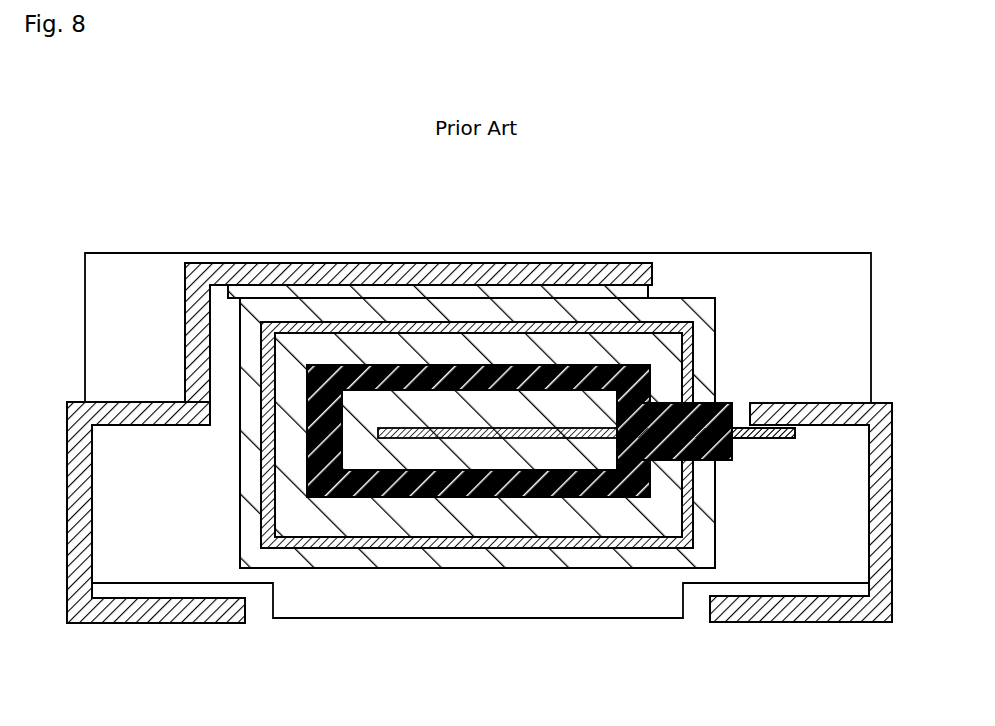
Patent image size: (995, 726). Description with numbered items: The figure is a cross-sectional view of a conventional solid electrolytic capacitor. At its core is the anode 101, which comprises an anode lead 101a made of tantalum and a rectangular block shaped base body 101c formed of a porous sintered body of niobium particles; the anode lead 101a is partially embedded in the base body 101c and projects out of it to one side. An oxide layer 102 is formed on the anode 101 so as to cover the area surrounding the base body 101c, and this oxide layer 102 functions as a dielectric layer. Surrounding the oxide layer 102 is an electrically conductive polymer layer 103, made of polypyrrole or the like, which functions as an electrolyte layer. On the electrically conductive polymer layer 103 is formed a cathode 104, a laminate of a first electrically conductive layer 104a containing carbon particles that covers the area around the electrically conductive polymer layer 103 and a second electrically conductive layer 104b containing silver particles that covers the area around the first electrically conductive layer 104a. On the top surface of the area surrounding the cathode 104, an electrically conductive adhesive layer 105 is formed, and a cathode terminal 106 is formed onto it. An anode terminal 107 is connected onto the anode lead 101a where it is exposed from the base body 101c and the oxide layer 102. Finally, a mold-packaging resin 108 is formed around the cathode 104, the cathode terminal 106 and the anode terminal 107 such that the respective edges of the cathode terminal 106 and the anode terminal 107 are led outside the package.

The anode 101 is at (568, 312).
The anode lead 101a is at (743, 426).
The base body 101c is at (538, 400).
The oxide layer 102 is at (400, 365).
The electrically conductive polymer layer 103 is at (432, 520).
The cathode 104 is at (471, 501).
The first electrically conductive layer 104a is at (668, 681).
The second electrically conductive layer 104b is at (640, 566).
The electrically conductive adhesive layer 105 is at (288, 293).
The cathode terminal 106 is at (205, 621).
The anode terminal 107 is at (803, 619).
The mold-packaging resin 108 is at (144, 273).